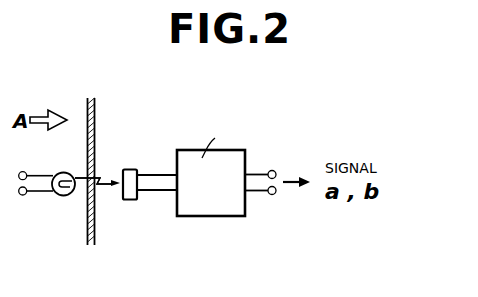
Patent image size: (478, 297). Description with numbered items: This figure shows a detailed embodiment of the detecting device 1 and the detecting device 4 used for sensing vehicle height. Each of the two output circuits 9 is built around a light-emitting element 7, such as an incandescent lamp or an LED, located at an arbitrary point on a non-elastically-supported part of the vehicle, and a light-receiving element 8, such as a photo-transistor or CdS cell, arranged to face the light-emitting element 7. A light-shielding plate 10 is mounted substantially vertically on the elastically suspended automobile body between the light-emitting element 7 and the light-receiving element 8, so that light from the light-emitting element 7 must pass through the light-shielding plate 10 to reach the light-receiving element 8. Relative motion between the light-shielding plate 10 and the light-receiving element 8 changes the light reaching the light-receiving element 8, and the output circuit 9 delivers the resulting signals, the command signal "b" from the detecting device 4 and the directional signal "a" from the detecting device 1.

The detecting device 1 is at (139, 155).
The detecting device 4 is at (139, 155).
The light-emitting element 7 is at (55, 196).
The light-receiving element 8 is at (130, 200).
The output circuit 9 is at (203, 216).
The light-shielding plate 10 is at (87, 224).